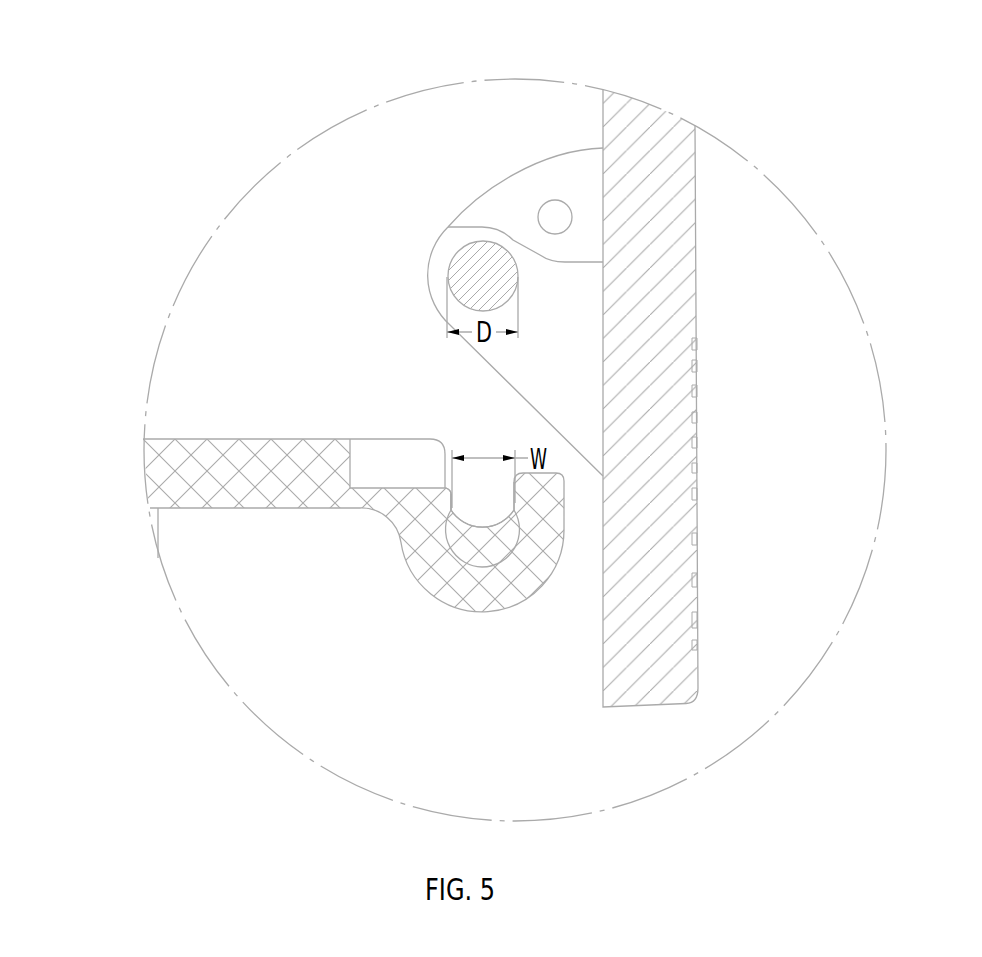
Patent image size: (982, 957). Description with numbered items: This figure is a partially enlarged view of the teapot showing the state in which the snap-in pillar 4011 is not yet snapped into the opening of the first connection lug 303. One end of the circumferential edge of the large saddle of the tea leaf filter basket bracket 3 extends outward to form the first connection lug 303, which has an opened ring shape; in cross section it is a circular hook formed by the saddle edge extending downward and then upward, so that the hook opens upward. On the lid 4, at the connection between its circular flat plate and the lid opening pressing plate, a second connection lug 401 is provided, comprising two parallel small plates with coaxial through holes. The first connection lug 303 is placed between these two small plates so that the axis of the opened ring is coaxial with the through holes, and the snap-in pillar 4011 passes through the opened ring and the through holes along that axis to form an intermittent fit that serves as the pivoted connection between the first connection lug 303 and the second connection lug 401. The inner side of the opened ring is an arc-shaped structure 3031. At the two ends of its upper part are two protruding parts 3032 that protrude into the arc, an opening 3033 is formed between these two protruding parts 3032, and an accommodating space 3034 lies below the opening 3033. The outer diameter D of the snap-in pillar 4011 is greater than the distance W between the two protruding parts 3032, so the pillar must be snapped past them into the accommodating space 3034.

The tea leaf filter basket bracket 3 is at (212, 381).
The first connection lug 303 is at (473, 615).
The arc-shaped structure 3031 is at (446, 544).
The protruding parts 3032 is at (453, 502).
The opening 3033 is at (490, 507).
The accommodating space 3034 is at (478, 540).
The lid 4 is at (780, 296).
The second connection lug 401 is at (423, 252).
The snap-in pillar 4011 is at (472, 265).